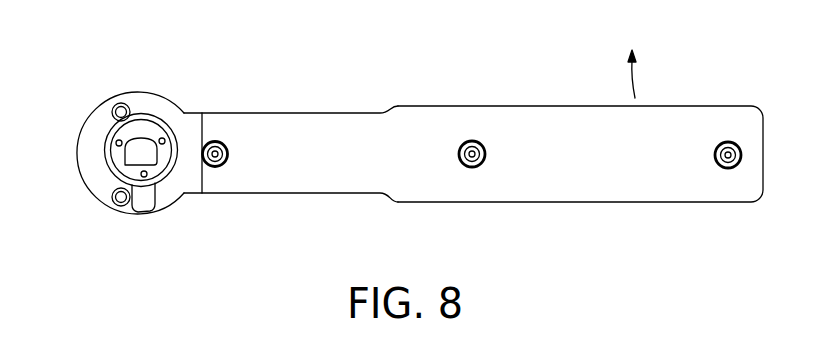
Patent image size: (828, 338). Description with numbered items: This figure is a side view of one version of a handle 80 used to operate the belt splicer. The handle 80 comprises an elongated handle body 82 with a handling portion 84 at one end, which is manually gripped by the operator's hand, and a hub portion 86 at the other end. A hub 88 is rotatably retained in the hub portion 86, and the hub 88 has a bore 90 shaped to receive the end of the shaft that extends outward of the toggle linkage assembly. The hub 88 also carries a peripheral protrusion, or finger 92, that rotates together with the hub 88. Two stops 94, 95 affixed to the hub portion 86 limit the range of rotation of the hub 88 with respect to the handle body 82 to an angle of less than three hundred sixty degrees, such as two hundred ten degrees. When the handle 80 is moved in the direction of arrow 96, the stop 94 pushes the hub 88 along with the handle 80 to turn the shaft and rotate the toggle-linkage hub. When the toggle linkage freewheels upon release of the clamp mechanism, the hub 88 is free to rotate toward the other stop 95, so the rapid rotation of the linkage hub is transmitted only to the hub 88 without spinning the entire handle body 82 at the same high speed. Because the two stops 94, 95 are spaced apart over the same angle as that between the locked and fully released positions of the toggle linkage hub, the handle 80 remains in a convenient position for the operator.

The handle 80 is at (473, 78).
The handle body 82 is at (423, 196).
The handling portion 84 is at (623, 192).
The hub portion 86 is at (153, 98).
The hub 88 is at (108, 153).
The bore 90 is at (152, 153).
The finger 92 is at (144, 207).
The stop 94 is at (123, 204).
The stop 95 is at (116, 106).
The arrow 96 is at (638, 80).